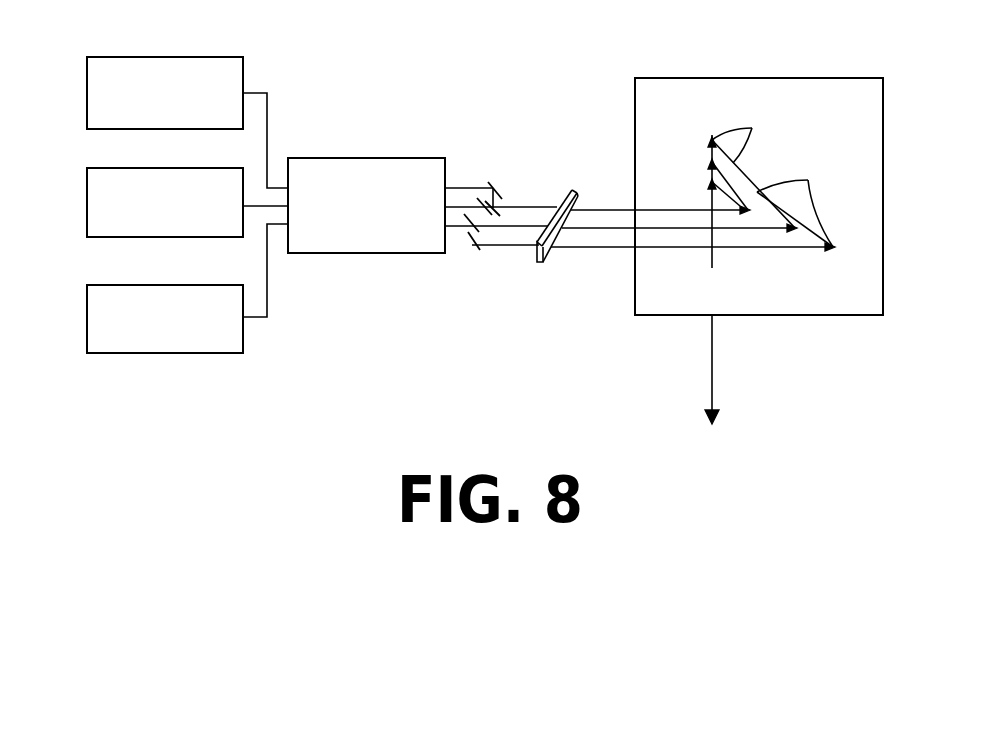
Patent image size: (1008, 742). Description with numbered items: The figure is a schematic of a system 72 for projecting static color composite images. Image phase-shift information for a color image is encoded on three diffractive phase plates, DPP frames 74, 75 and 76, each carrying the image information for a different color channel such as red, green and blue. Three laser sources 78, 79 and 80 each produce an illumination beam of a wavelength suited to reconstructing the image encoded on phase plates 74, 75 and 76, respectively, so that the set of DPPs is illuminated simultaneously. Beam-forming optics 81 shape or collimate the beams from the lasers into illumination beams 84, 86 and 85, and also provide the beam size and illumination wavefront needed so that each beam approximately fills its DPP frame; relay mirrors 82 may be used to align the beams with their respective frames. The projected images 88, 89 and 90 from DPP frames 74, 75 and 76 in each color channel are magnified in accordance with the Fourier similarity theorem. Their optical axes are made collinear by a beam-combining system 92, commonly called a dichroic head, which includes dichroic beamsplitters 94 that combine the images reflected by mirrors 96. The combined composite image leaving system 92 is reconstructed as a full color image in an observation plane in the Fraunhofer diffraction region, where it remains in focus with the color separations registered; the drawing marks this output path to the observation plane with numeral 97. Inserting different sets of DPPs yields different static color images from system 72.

The system 72 is at (507, 88).
The DPP frame 74 is at (579, 195).
The DPP frame 75 is at (555, 204).
The DPP frame 76 is at (552, 265).
The laser source 78 is at (87, 93).
The laser source 79 is at (87, 204).
The laser source 80 is at (87, 320).
The beam-forming optics 81 is at (347, 158).
The relay mirrors 82 is at (487, 182).
The illumination beam 84 is at (530, 207).
The illumination beam 85 is at (495, 236).
The illumination beam 86 is at (528, 246).
The projected image 88 is at (618, 210).
The projected image 89 is at (590, 229).
The projected image 90 is at (620, 249).
The beam-combining system 92 is at (750, 78).
The dichroic beamsplitters 94 is at (751, 183).
The mirrors 96 is at (795, 199).
The output beam to observation plane 97 is at (713, 358).